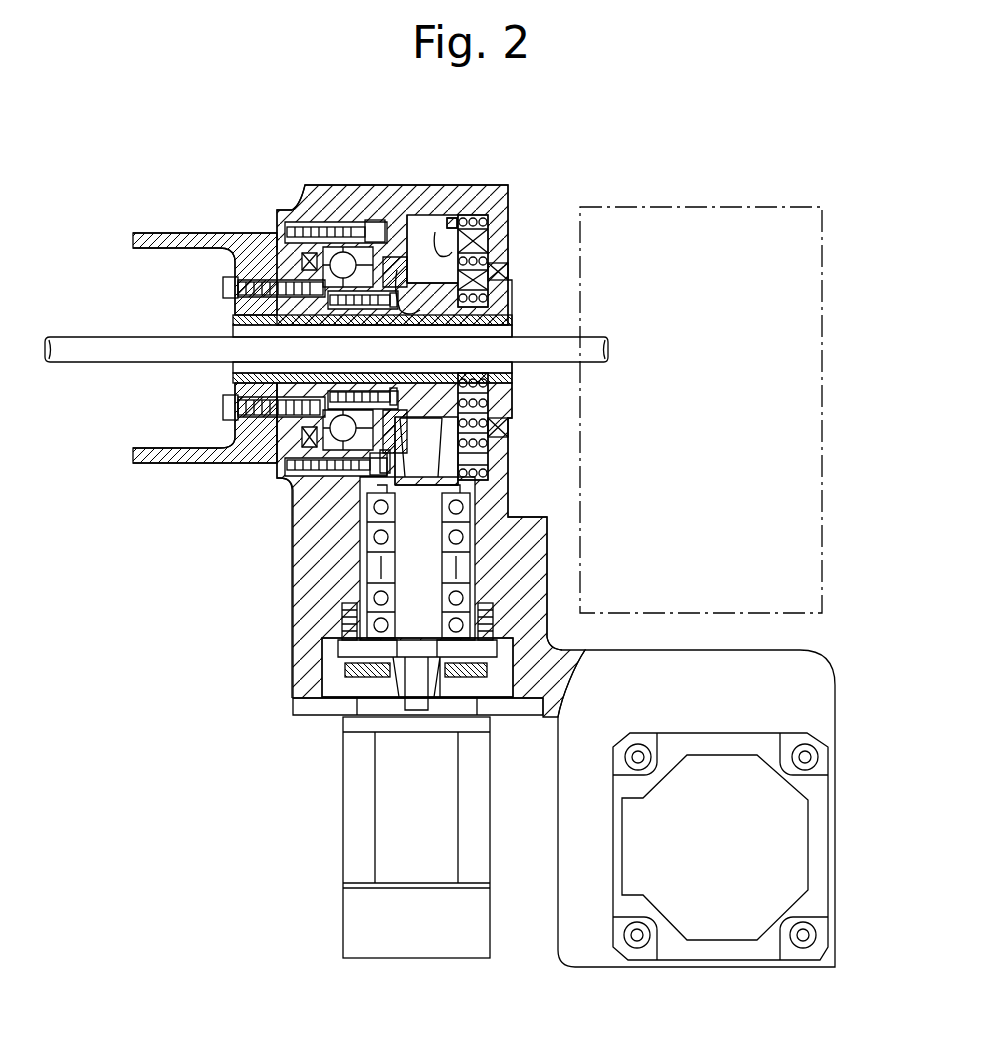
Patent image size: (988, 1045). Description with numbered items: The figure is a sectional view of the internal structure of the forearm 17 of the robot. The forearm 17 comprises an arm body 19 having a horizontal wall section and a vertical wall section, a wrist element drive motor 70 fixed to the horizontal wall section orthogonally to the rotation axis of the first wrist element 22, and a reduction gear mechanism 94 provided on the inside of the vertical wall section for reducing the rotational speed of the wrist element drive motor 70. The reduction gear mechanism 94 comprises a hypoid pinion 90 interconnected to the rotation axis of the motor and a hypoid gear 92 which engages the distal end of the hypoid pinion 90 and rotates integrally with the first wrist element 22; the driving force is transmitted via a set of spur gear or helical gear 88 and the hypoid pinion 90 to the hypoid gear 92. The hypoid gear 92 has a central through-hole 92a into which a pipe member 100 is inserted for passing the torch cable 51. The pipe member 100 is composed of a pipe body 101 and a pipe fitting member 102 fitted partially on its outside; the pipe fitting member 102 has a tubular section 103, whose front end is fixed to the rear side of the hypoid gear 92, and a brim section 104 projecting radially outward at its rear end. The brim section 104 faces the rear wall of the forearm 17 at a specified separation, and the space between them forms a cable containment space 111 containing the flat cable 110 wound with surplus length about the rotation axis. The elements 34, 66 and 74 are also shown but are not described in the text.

The forearm 17 is at (818, 652).
The arm body 19 is at (790, 610).
The first wrist element 22 is at (160, 242).
The holder 34 is at (830, 375).
The torch cable 51 is at (560, 345).
The motor housing 66 is at (813, 703).
The wrist element drive motor 70 is at (358, 813).
The cover plate 74 is at (788, 827).
The spur gear or helical gear 88 is at (400, 690).
The hypoid pinion 90 is at (428, 572).
The hypoid gear 92 is at (505, 432).
The through-hole 92a is at (410, 300).
The reduction gear mechanism 94 is at (663, 438).
The pipe member 100 is at (508, 303).
The pipe body 101 is at (233, 317).
The pipe fitting member 102 is at (428, 272).
The tubular section 103 is at (512, 378).
The brim section 104 is at (452, 225).
The flat cable 110 is at (500, 262).
The cable containment space 111 is at (478, 462).